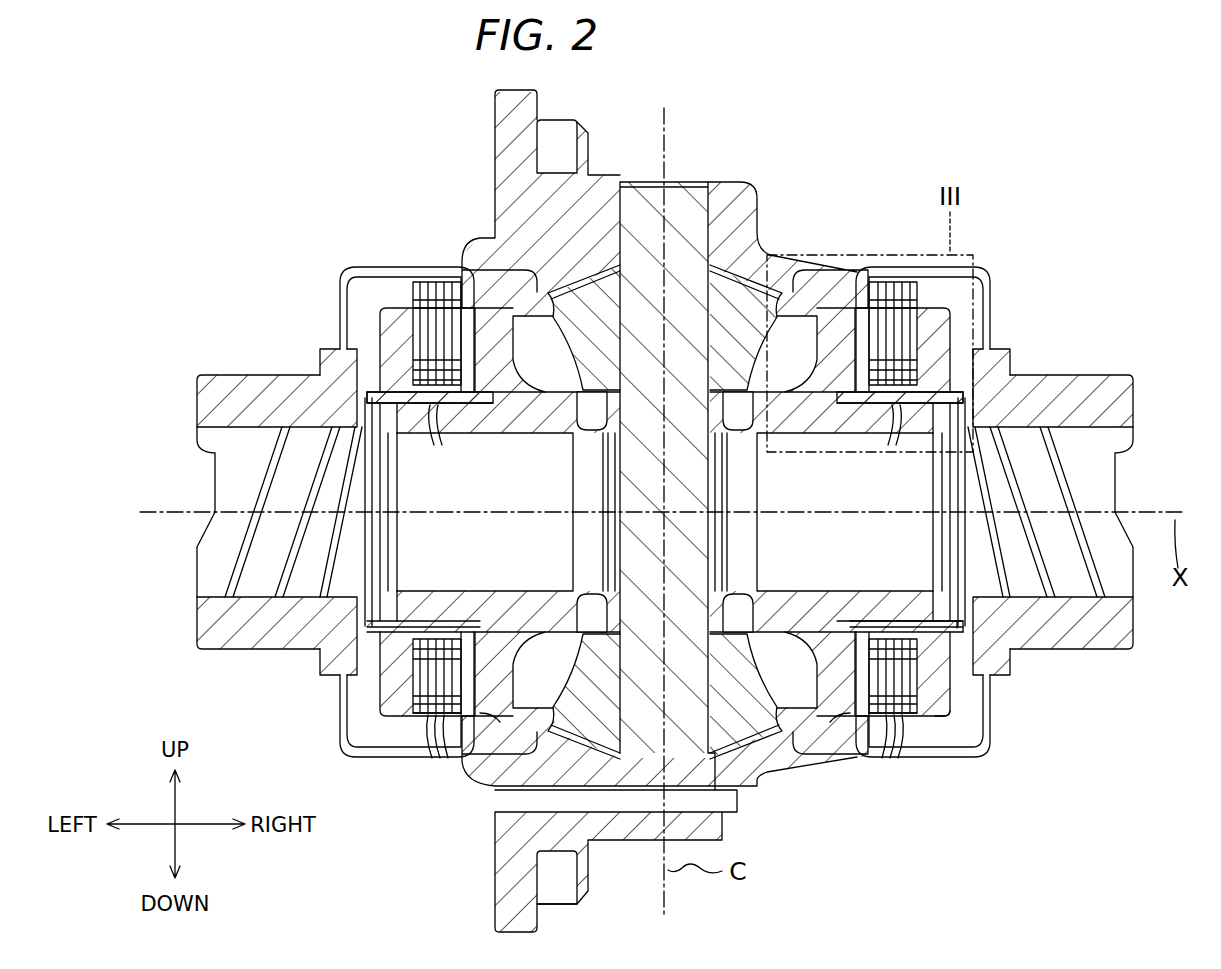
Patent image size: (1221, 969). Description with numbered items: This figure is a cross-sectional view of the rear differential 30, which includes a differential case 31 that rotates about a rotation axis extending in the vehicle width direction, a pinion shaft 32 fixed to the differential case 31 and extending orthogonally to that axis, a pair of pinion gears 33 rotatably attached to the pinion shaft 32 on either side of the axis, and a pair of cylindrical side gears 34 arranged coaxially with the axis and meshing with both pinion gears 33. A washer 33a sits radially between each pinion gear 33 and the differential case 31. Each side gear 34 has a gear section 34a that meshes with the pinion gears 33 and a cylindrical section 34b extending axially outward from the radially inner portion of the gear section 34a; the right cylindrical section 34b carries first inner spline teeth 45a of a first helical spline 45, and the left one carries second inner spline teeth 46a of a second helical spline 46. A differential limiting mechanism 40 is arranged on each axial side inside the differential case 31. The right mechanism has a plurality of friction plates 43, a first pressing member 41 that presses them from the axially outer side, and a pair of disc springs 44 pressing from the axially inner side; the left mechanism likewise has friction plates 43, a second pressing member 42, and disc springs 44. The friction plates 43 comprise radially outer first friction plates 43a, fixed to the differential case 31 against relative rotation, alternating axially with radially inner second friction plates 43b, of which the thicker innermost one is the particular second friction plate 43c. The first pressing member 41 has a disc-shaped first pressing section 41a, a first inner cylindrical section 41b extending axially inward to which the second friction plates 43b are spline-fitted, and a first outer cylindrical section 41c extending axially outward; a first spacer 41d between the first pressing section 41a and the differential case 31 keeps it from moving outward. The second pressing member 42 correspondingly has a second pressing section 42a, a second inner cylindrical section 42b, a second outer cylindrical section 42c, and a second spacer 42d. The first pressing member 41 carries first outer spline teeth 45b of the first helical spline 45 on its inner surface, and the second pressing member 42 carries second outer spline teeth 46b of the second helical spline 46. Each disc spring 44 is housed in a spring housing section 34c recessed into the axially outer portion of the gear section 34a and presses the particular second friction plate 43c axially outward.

The rear differential 30 is at (665, 511).
The differential case 31 is at (765, 205).
The pinion shaft 32 is at (700, 180).
The pinion gear 33 is at (488, 268).
The washer 33a is at (553, 296).
The side gear 34 is at (670, 517).
The gear section 34a is at (527, 592).
The cylindrical section 34b is at (418, 592).
The spring housing section 34c is at (478, 630).
The differential limiting mechanism 40 is at (663, 495).
The first pressing member 41 is at (934, 550).
The first pressing section 41a is at (947, 654).
The first inner cylindrical section 41b is at (846, 598).
The first outer cylindrical section 41c is at (956, 636).
The first spacer 41d is at (945, 712).
The second pressing member 42 is at (392, 482).
The second pressing section 42a is at (386, 360).
The second inner cylindrical section 42b is at (480, 412).
The second outer cylindrical section 42c is at (372, 394).
The second spacer 42d is at (385, 702).
The friction plate 43 is at (677, 569).
The first friction plate 43a is at (436, 762).
The second friction plate 43b is at (888, 606).
The particular second friction plate 43c is at (485, 750).
The disc spring 44 is at (478, 394).
The first helical spline 45 is at (894, 512).
The first inner spline teeth 45a is at (942, 596).
The first outer spline teeth 45b is at (862, 445).
The second helical spline 46 is at (384, 514).
The second inner spline teeth 46a is at (368, 438).
The second outer spline teeth 46b is at (366, 623).